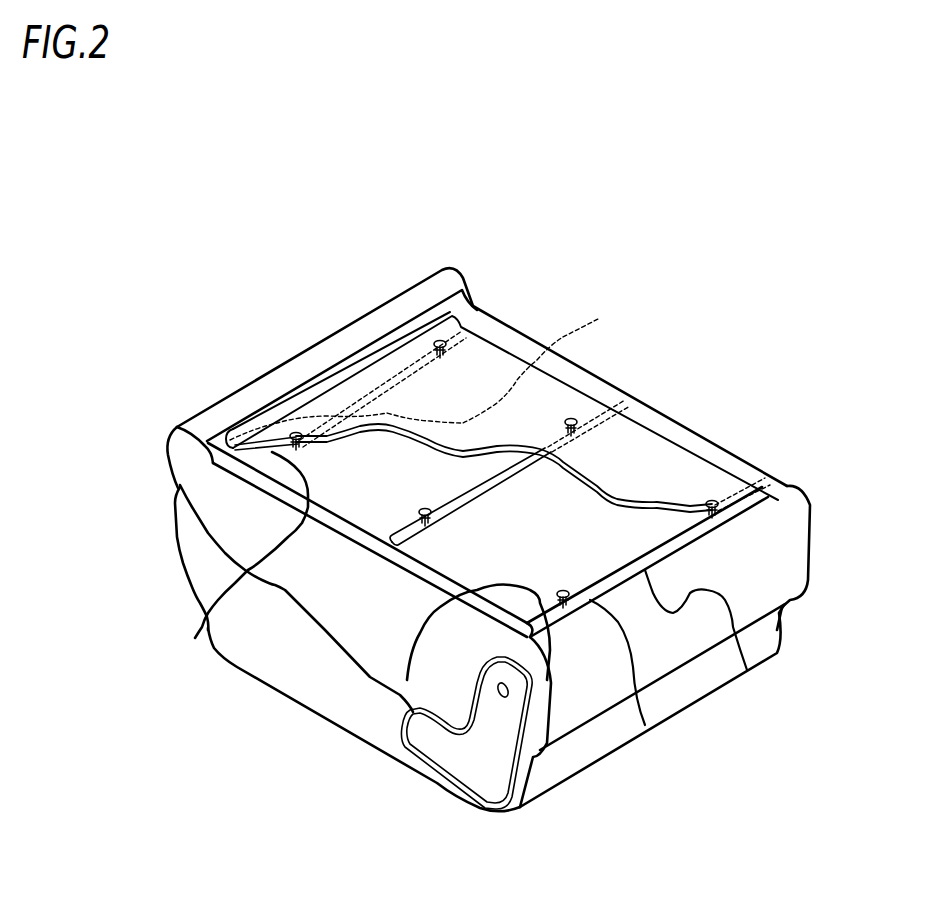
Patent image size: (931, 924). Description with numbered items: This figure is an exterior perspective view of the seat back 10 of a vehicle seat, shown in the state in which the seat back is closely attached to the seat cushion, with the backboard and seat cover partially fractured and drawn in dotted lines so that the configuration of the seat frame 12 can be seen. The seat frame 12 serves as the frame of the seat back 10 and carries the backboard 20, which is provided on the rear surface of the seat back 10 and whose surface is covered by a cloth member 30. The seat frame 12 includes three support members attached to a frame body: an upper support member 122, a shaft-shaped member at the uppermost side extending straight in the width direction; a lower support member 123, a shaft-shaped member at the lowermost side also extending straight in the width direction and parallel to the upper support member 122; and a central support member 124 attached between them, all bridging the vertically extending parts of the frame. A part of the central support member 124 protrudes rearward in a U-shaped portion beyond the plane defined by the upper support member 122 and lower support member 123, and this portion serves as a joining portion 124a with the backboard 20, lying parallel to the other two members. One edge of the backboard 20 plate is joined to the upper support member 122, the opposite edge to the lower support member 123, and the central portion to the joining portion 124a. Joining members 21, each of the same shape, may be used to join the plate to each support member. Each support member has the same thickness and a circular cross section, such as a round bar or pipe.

The seat back 10 is at (248, 358).
The seat frame 12 is at (333, 810).
The upper support member 122 is at (195, 638).
The lower support member 123 is at (425, 635).
The central support member 124 is at (425, 559).
The joining portion 124a is at (507, 463).
The cloth member 30 is at (515, 336).
The backboard 20 is at (747, 670).
The joining member 21 is at (645, 725).